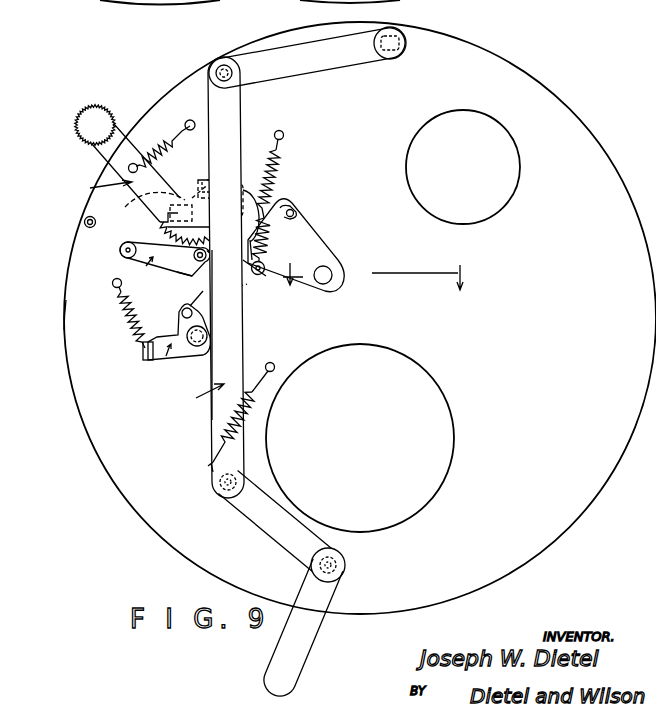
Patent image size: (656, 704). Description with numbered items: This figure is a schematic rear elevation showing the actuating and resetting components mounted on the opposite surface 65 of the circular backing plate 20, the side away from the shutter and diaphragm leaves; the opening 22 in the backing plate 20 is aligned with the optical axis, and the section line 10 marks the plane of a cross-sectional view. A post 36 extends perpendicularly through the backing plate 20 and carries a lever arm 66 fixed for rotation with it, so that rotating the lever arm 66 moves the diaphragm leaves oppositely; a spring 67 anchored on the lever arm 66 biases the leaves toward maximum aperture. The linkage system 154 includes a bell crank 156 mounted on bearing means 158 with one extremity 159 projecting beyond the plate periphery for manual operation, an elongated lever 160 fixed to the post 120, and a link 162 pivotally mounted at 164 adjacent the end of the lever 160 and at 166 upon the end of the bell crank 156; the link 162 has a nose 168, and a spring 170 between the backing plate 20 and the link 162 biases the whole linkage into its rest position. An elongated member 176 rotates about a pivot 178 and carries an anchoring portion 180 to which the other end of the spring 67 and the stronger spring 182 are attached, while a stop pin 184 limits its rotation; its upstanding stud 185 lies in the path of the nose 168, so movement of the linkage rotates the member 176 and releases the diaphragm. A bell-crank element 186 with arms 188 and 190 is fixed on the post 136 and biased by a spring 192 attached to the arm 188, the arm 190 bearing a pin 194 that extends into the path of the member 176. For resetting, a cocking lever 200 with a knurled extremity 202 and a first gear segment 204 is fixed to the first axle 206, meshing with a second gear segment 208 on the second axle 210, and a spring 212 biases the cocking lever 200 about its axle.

The section line 10 is at (378, 266).
The backing plate 20 is at (108, 427).
The opening 22 is at (447, 432).
The post 36 is at (326, 284).
The opposite surface 65 is at (82, 270).
The lever arm 66 is at (313, 252).
The spring 67 is at (300, 232).
The post 120 is at (395, 28).
The post 136 is at (192, 346).
The linkage system 154 is at (195, 335).
The bell crank 156 is at (268, 518).
The bearing means 158 is at (346, 558).
The extremity of bell crank 159 is at (288, 680).
The elongated lever 160 is at (325, 62).
The link 162 is at (233, 352).
The pivot 164 is at (208, 68).
The pivot 166 is at (216, 490).
The nose 168 is at (160, 222).
The spring 170 is at (232, 418).
The elongated member 176 is at (146, 266).
The pivot 178 is at (120, 252).
The anchoring portion 180 is at (264, 274).
The spring 182 is at (277, 186).
The pin 184 is at (257, 276).
The stud 185 is at (182, 273).
The element 186 is at (166, 356).
The arm 188 is at (150, 357).
The arm 190 is at (180, 316).
The spring 192 is at (130, 315).
The pin 194 is at (206, 274).
The cocking lever 200 is at (95, 188).
The knurled extremity 202 is at (82, 128).
The first gear segment 204 is at (158, 237).
The first axle 206 is at (133, 205).
The second gear segment 208 is at (202, 181).
The second axle 210 is at (243, 183).
The spring 212 is at (161, 140).